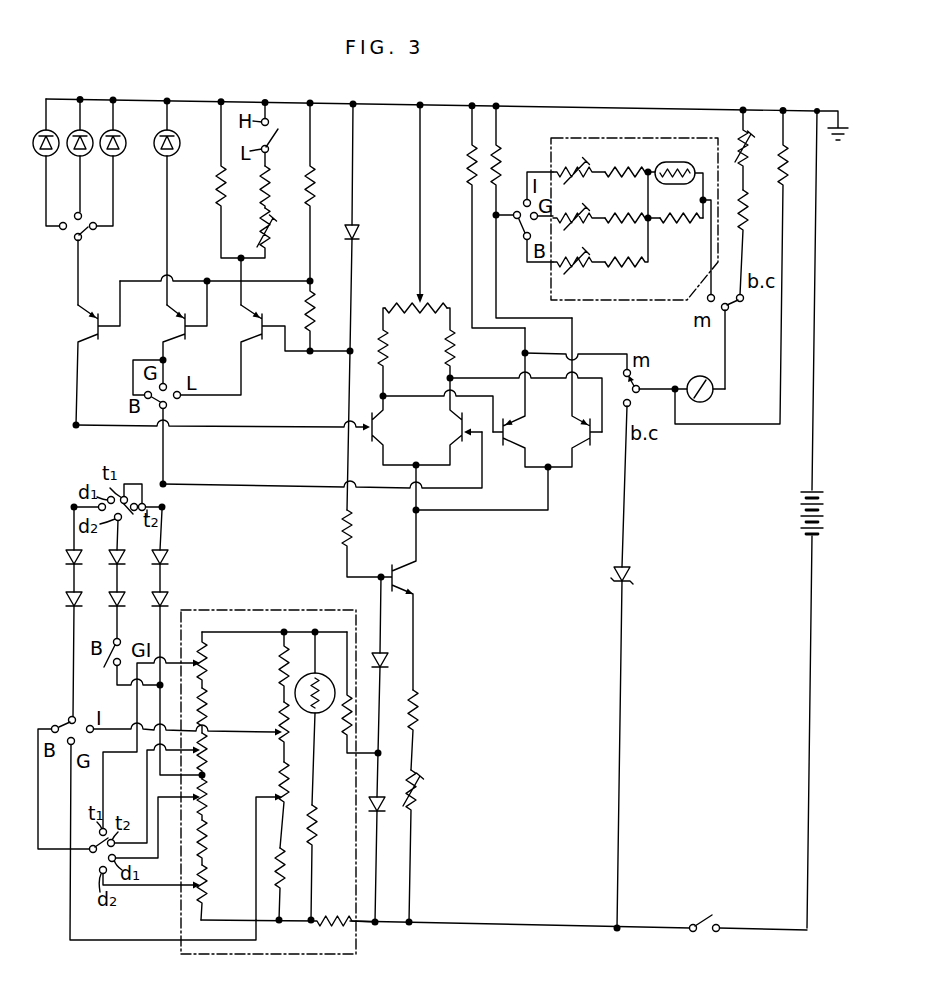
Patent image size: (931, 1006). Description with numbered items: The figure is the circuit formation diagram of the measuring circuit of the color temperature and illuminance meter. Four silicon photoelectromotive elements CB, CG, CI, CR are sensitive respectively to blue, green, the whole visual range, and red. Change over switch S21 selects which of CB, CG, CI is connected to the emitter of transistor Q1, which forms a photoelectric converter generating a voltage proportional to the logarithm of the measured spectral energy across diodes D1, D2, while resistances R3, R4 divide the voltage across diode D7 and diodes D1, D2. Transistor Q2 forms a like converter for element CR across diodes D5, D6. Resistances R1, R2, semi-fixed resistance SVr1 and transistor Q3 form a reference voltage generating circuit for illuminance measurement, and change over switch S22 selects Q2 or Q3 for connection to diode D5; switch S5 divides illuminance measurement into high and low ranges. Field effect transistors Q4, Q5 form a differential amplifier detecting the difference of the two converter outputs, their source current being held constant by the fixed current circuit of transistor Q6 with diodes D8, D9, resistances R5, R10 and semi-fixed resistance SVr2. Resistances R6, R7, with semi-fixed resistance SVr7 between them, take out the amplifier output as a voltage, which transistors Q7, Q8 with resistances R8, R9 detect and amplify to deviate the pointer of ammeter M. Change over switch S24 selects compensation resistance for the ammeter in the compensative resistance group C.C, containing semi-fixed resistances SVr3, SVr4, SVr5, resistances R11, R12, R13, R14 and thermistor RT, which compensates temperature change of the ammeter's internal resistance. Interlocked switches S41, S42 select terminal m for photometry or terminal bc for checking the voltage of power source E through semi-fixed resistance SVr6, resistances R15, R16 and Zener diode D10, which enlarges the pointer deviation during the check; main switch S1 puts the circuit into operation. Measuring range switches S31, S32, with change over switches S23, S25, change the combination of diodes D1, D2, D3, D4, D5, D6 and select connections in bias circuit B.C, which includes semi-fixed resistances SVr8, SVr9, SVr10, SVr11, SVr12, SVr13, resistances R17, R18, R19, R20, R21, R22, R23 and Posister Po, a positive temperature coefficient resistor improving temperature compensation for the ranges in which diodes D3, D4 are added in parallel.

The silicon photoelectromotive element CB is at (56, 152).
The silicon photoelectromotive element CG is at (90, 152).
The silicon photoelectromotive element CI is at (123, 152).
The silicon photoelectromotive element CR is at (177, 152).
The change over switch S21 is at (84, 233).
The change over switch for the divisional measuring range S5 is at (279, 129).
The resistance R1 is at (217, 192).
The resistance R2 is at (262, 192).
The resistance R3 is at (306, 192).
The semi-fixed resistance SVr1 is at (268, 252).
The resistance R4 is at (305, 298).
The transistor Q1 is at (102, 335).
The transistor Q2 is at (189, 335).
The transistor Q3 is at (266, 335).
The change over switch S22 is at (168, 406).
The diode D7 is at (359, 228).
The semi-fixed resistance SVr7 is at (413, 300).
The resistance R6 is at (388, 350).
The resistance R7 is at (455, 350).
The electric field effect transistor Q4 is at (384, 434).
The electric field effect transistor Q5 is at (458, 443).
The transistor Q7 is at (508, 445).
The transistor Q8 is at (594, 445).
The resistance R8 is at (470, 160).
The resistance R9 is at (497, 162).
The change over switch S24 is at (521, 239).
The compensative resistance group C.C is at (640, 128).
The semi-fixed resistance SVr3 is at (579, 163).
The resistance R11 is at (612, 166).
The thermistor RT is at (662, 185).
The semi-fixed resistance SVr4 is at (579, 208).
The resistance R12 is at (610, 212).
The resistance R14 is at (672, 226).
The semi-fixed resistance SVr5 is at (579, 253).
The resistance R13 is at (610, 258).
The semi-fixed resistance SVr6 is at (740, 133).
The resistance R15 is at (746, 228).
The change over switch S41 is at (731, 309).
The ammeter M is at (703, 376).
The resistance R16 is at (785, 190).
The change over switch S42 is at (636, 392).
The Zenner diode D10 is at (631, 576).
The power source E is at (822, 514).
The main switch S1 is at (702, 917).
The resistance R5 is at (353, 528).
The transistor Q6 is at (403, 598).
The diode D8 is at (387, 656).
The resistance R10 is at (420, 705).
The diode D9 is at (384, 790).
The semi-fixed resistance SVr2 is at (421, 795).
The measuring range change over switch S32 is at (126, 520).
The diode D1 is at (68, 560).
The diode D2 is at (68, 607).
The diode D3 is at (112, 560).
The diode D4 is at (111, 607).
The diode D5 is at (155, 560).
The diode D6 is at (154, 607).
The change over switch S25 is at (118, 670).
The change over switch S23 is at (62, 718).
The measuring range change over switch S31 is at (96, 842).
The bias circuit B.C is at (250, 958).
The semi-fixed resistance SVr8 is at (208, 668).
The resistance R17 is at (208, 712).
The semi-fixed resistance SVr9 is at (208, 765).
The semi-fixed resistance SVr10 is at (208, 808).
The resistance R23 is at (208, 830).
The semi-fixed resistance SVr11 is at (208, 893).
The resistance R18 is at (280, 658).
The semi-fixed resistance SVr12 is at (280, 704).
The semi-fixed resistance SVr13 is at (281, 765).
The resistance R19 is at (286, 878).
The Posister Po is at (320, 676).
The resistance R20 is at (316, 822).
The resistance R21 is at (343, 735).
The resistance R22 is at (346, 928).